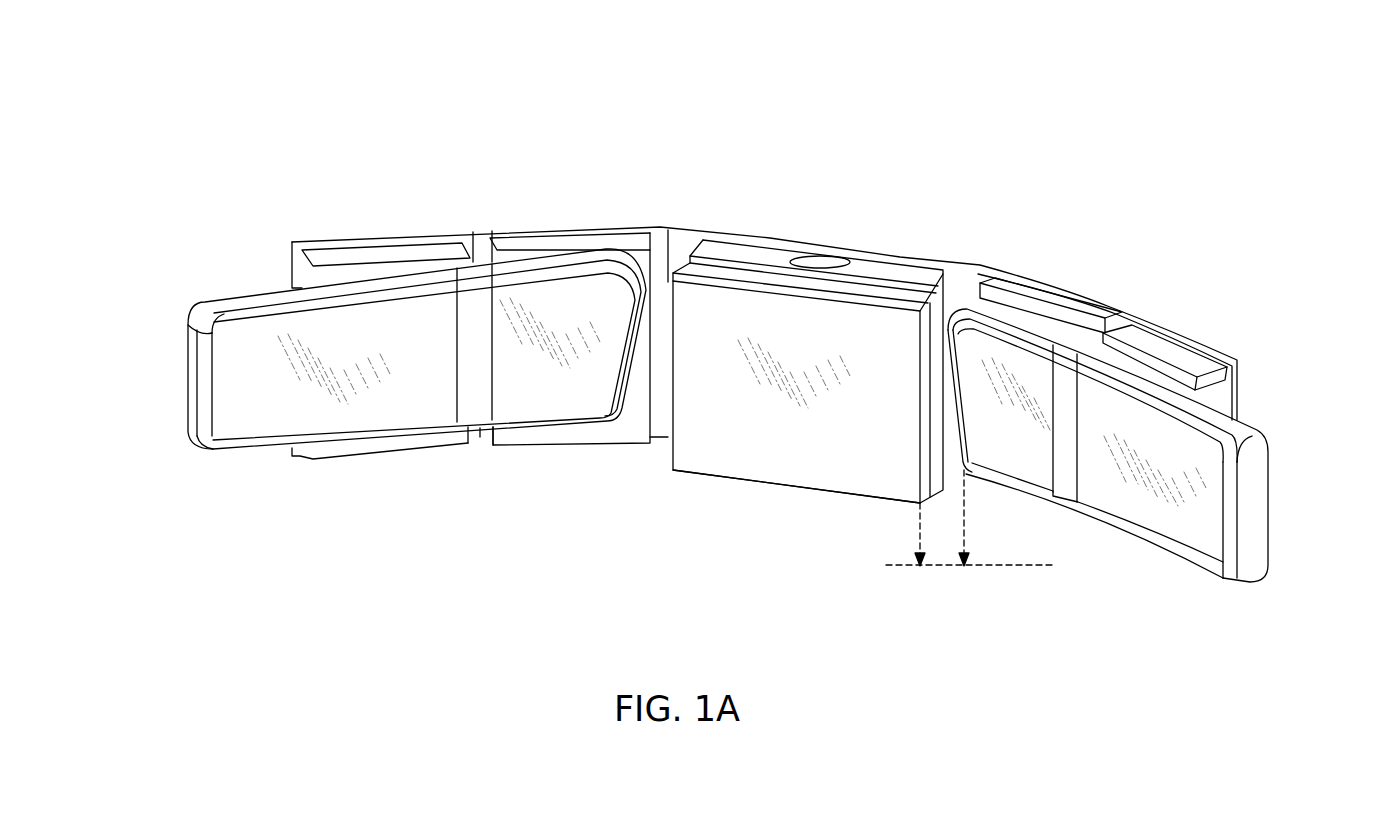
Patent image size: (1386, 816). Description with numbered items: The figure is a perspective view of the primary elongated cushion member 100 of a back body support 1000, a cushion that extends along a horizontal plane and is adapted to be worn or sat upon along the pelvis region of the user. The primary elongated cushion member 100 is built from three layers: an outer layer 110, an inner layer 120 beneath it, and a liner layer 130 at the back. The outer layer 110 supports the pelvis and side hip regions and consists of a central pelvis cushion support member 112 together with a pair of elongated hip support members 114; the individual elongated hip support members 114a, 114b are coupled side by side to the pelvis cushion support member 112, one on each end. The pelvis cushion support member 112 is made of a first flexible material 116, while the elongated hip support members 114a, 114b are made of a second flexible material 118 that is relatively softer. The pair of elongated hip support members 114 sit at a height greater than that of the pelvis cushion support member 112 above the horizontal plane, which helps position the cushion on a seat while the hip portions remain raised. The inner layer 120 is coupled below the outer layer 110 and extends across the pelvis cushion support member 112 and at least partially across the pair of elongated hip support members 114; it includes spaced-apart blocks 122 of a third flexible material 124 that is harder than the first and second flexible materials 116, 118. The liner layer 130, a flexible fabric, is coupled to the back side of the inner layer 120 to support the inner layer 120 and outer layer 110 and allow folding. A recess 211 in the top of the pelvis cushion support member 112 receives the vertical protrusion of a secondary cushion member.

The back body support 1000 is at (1120, 112).
The primary elongated cushion member 100 is at (1204, 318).
The outer layer 110 is at (1276, 481).
The pelvis cushion support member 112 is at (673, 470).
The pair of elongated hip support members 114 is at (202, 302).
The elongated hip support member 114a is at (192, 434).
The elongated hip support member 114b is at (1258, 571).
The first flexible material 116 is at (714, 462).
The second flexible material 118 is at (246, 432).
The inner layer 120 is at (1222, 393).
The blocks 122 is at (313, 255).
The third flexible material 124 is at (633, 246).
The liner layer 130 is at (1242, 357).
The recess 211 is at (828, 256).